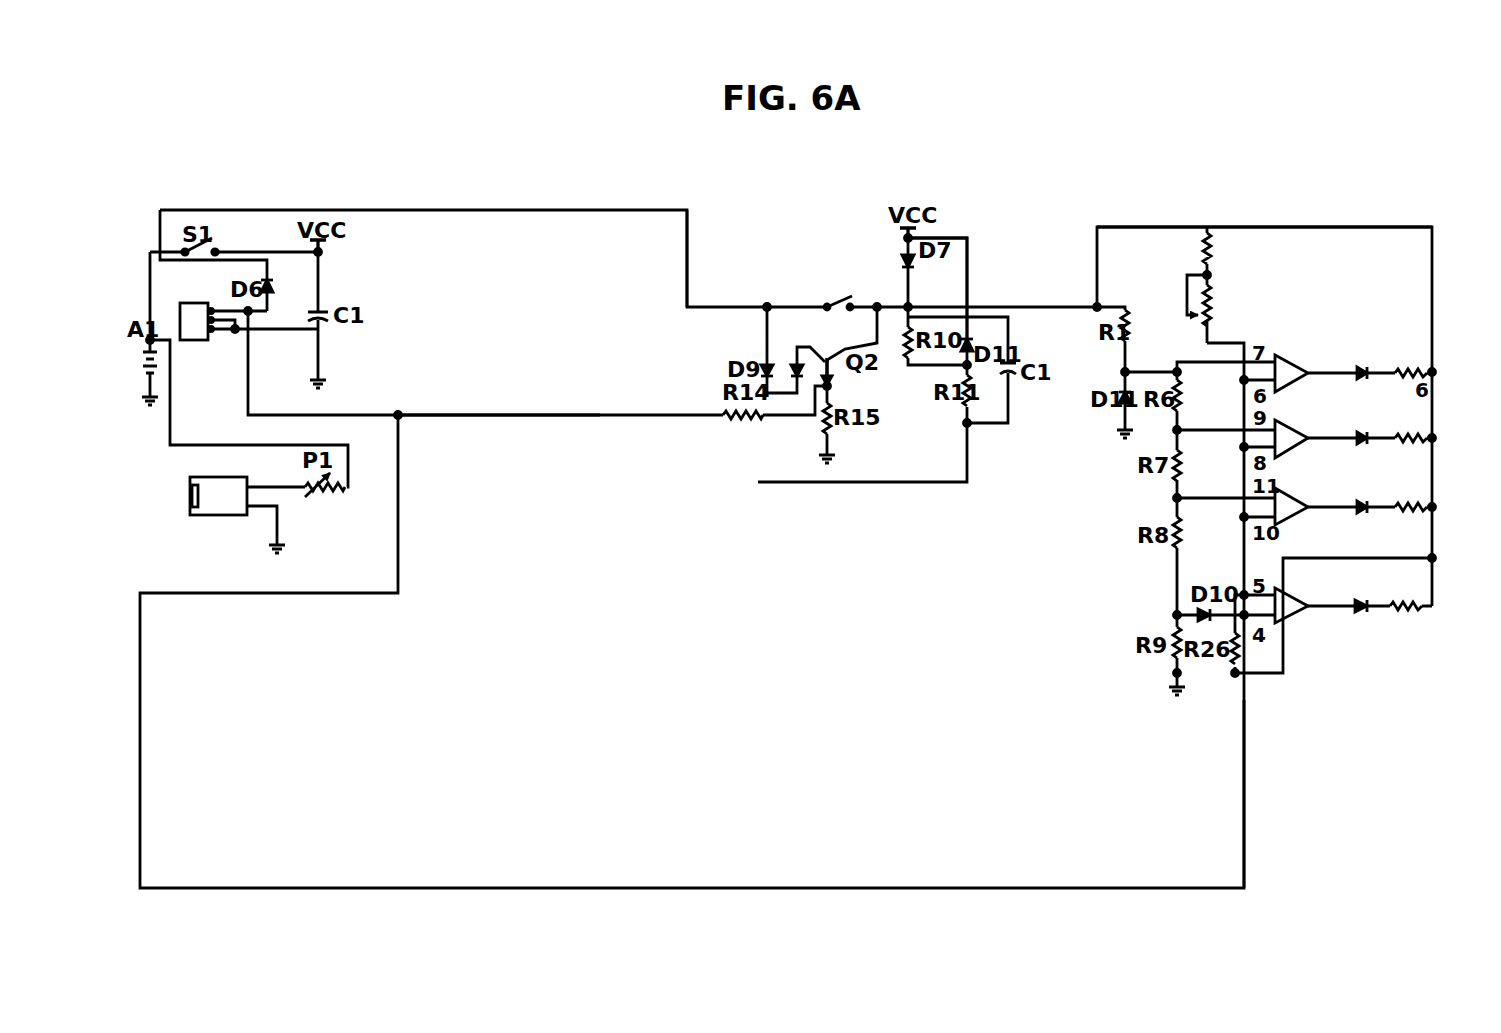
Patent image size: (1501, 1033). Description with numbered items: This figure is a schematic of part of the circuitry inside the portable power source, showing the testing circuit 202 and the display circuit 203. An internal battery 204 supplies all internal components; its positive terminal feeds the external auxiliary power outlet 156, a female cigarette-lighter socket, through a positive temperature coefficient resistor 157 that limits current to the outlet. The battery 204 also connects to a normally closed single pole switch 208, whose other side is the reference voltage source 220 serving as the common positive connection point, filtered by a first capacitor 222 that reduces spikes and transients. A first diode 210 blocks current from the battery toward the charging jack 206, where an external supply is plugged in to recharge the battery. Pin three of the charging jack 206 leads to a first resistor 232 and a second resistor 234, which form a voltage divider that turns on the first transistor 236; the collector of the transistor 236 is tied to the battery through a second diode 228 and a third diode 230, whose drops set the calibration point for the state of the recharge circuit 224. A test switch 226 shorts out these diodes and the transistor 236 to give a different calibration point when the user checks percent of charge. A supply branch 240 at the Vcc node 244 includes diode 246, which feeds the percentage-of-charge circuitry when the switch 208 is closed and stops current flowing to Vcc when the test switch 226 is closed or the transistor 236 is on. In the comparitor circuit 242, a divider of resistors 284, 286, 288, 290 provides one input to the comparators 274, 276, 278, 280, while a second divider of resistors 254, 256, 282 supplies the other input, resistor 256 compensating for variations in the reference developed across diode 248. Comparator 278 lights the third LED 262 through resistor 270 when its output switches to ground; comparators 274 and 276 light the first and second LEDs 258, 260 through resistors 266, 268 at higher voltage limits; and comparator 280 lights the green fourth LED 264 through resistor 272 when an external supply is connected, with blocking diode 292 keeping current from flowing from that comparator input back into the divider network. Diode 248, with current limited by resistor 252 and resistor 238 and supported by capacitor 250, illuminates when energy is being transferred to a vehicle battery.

The external auxiliary power outlet 156 is at (210, 500).
The positive temperature coefficient resistor 157 is at (342, 500).
The testing circuit 202 is at (709, 255).
The display circuit 203 is at (1324, 196).
The internal battery 204 is at (170, 368).
The charging jack 206 is at (190, 303).
The single pole switch 208 is at (212, 238).
The first diode 210 is at (278, 278).
The reference voltage source 220 is at (338, 226).
The first capacitor 222 is at (352, 318).
The recharge circuit 224 is at (481, 402).
The test switch 226 is at (848, 299).
The second diode 228 is at (764, 363).
The third diode 230 is at (796, 360).
The first resistor 232 is at (745, 420).
The second resistor 234 is at (834, 430).
The first transistor 236 is at (839, 368).
The resistor R10 238 is at (904, 338).
The timing circuit 240 is at (977, 226).
The comparitor circuit 242 is at (1308, 750).
The supply voltage VCC 244 is at (908, 208).
The diode D7 246 is at (912, 270).
The diode D11 248 is at (970, 337).
The capacitor C4 250 is at (1019, 381).
The resistor R11 252 is at (963, 406).
The resistor 254 is at (1203, 246).
The resistor 256 is at (1211, 301).
The first LED 258 is at (1362, 366).
The second LED 260 is at (1362, 431).
The third LED 262 is at (1360, 500).
The fourth LED 264 is at (1360, 599).
The resistor R2 266 is at (1420, 368).
The resistor R3 268 is at (1420, 436).
The resistor R4 270 is at (1420, 504).
The resistor R5 272 is at (1408, 610).
The comparator 274 is at (1297, 359).
The comparator 276 is at (1300, 428).
The comparator 278 is at (1297, 494).
The comparator 280 is at (1294, 613).
The resistor 282 is at (1238, 672).
The resistor R6 284 is at (1186, 397).
The resistor R7 286 is at (1186, 463).
The resistor R8 288 is at (1186, 530).
The resistor R9 290 is at (1176, 660).
The diode D10 292 is at (1196, 612).